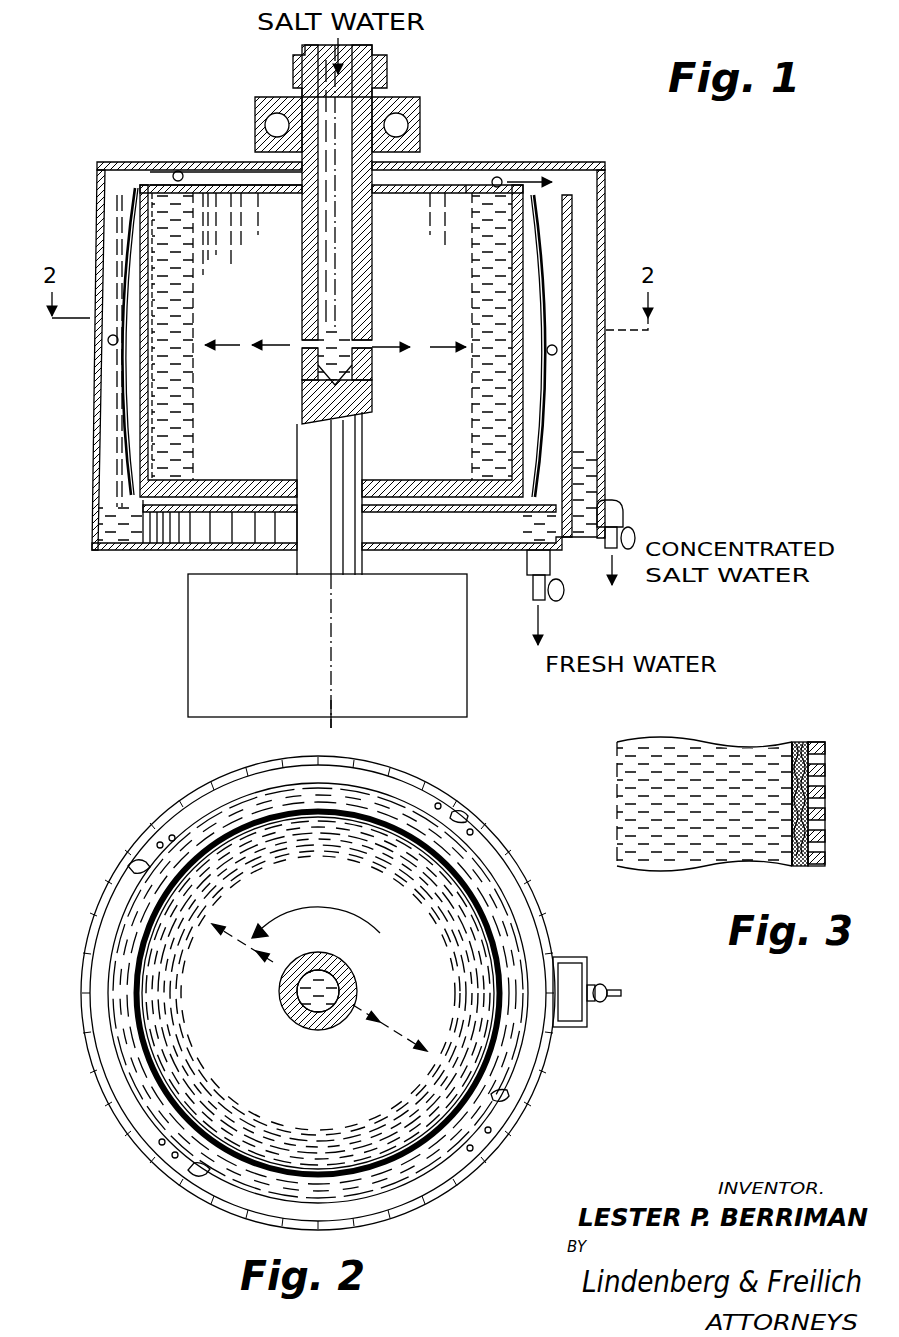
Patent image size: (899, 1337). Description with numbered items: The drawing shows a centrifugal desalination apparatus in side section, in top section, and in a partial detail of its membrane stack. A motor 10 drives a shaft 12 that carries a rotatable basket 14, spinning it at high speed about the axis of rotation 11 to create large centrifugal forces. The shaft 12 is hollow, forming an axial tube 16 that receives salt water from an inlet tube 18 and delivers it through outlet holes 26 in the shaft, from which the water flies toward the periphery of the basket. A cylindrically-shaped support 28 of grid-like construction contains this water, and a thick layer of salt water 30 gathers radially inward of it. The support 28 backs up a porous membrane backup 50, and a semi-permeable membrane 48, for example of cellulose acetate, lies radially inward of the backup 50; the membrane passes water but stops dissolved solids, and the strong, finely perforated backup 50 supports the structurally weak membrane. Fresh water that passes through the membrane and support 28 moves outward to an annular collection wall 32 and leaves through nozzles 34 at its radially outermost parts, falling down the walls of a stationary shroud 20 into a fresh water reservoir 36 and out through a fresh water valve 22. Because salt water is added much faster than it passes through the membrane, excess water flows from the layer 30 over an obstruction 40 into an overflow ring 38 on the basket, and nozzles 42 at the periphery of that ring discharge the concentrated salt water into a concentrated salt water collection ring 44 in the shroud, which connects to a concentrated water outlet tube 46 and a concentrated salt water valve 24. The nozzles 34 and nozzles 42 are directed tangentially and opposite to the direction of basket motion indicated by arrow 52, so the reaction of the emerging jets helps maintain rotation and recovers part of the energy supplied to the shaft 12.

In FIG. 1, the motor 10 is at (468, 603).
In FIG. 1, the axis of rotation 11 is at (325, 722).
In FIG. 1, the shaft 12 is at (364, 574).
In FIG. 2, the shaft 12 is at (345, 978).
In FIG. 1, the rotatable basket 14 is at (128, 225).
In FIG. 2, the rotatable basket 14 is at (318, 993).
In FIG. 1, the axial tube 16 is at (370, 228).
In FIG. 1, the tube 18 is at (383, 57).
In FIG. 1, the stationary shroud 20 is at (600, 418).
In FIG. 2, the stationary shroud 20 is at (88, 956).
In FIG. 1, the fresh water valve 22 is at (558, 592).
In FIG. 1, the concentrated salt water valve 24 is at (612, 506).
In FIG. 2, the concentrated salt water valve 24 is at (600, 992).
In FIG. 1, the outlet holes 26 is at (372, 342).
In FIG. 2, the outlet holes 26 is at (357, 1000).
In FIG. 1, the cylindrically-shaped support 28 is at (146, 405).
In FIG. 2, the cylindrically-shaped support 28 is at (145, 1052).
In FIG. 3, the cylindrically-shaped support 28 is at (826, 749).
In FIG. 1, the layer of salt water 30 is at (196, 432).
In FIG. 2, the layer of salt water 30 is at (185, 1036).
In FIG. 3, the layer of salt water 30 is at (650, 805).
In FIG. 1, the annular collection wall 32 is at (118, 366).
In FIG. 2, the annular collection wall 32 is at (138, 1102).
In FIG. 1, the nozzles 34 is at (108, 343).
In FIG. 2, the nozzles 34 is at (130, 868).
In FIG. 1, the fresh water reservoir 36 is at (100, 520).
In FIG. 1, the overflow ring 38 is at (178, 170).
In FIG. 1, the obstruction 40 is at (466, 196).
In FIG. 1, the nozzles 42 is at (504, 178).
In FIG. 1, the concentrated salt water collection ring 44 is at (462, 166).
In FIG. 1, the concentrated water outlet tube 46 is at (594, 170).
In FIG. 2, the concentrated water outlet tube 46 is at (572, 958).
In FIG. 3, the semi-permeable membrane 48 is at (790, 742).
In FIG. 3, the porous membrane backup 50 is at (801, 742).
In FIG. 2, the arrow 52 is at (318, 907).